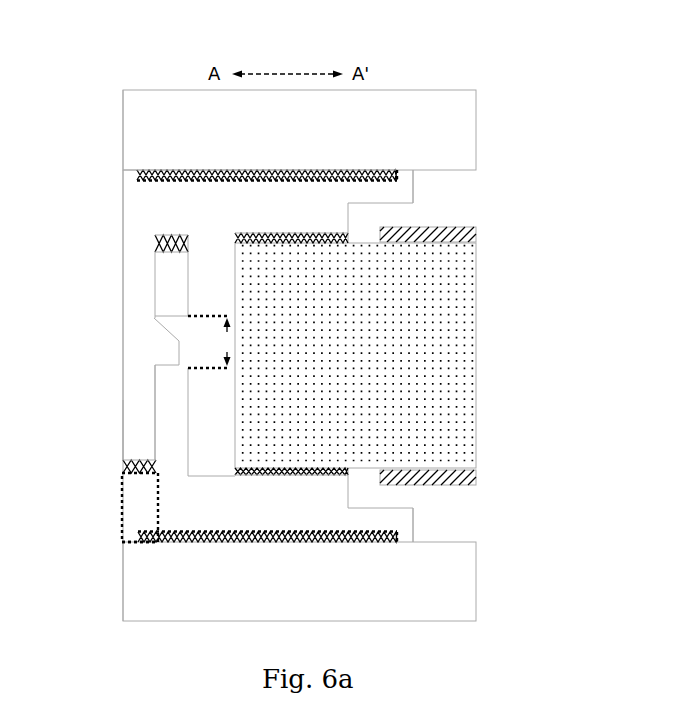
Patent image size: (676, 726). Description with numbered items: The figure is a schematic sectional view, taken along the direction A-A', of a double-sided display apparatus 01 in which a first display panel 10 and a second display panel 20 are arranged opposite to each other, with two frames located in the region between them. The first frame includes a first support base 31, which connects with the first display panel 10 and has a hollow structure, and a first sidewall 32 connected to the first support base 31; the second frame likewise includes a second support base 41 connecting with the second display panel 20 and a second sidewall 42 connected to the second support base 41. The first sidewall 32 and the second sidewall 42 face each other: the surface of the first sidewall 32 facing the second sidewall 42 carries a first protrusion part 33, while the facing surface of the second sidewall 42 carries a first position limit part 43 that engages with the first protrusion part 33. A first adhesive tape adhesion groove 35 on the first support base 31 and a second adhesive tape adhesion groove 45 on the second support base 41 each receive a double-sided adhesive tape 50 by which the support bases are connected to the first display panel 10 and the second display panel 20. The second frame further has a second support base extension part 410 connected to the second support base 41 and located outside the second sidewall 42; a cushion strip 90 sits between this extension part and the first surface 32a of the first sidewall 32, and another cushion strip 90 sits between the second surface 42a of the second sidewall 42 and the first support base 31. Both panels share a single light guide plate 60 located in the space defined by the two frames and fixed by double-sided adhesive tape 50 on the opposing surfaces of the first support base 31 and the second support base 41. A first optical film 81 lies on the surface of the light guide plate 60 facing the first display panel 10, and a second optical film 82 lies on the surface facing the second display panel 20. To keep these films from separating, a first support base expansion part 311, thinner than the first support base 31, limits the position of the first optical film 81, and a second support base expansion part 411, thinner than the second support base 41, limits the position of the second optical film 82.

The double-sided display apparatus 01 is at (118, 80).
The first display panel 10 is at (476, 128).
The second display panel 20 is at (476, 578).
The first support base 31 is at (303, 205).
The first support base expansion part 311 is at (400, 188).
The first sidewall 32 is at (130, 250).
The first surface 32a is at (150, 462).
The first protrusion part 33 is at (160, 345).
The first adhesive tape adhesion groove 35 is at (138, 172).
The second support base 41 is at (318, 510).
The second support base expansion part 411 is at (395, 523).
The second sidewall 42 is at (170, 400).
The second surface 42a is at (163, 250).
The first position limit part 43 is at (214, 342).
The second adhesive tape adhesion groove 45 is at (122, 542).
The double-sided adhesive tape 50 is at (162, 173).
The light guide plate 60 is at (476, 325).
The first optical film 81 is at (476, 240).
The second optical film 82 is at (476, 470).
The cushion strip 90 is at (160, 248).
The second support base extension part 410 is at (122, 500).